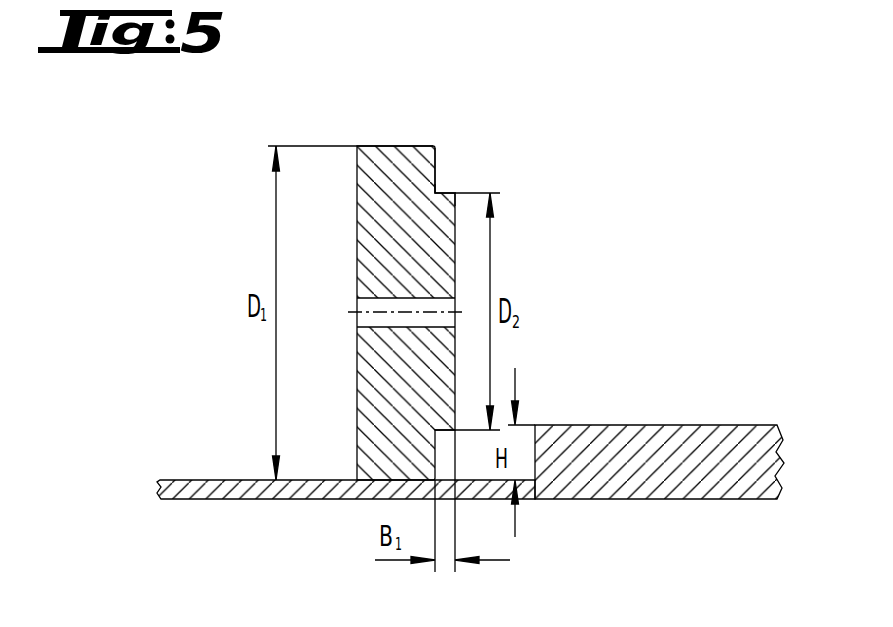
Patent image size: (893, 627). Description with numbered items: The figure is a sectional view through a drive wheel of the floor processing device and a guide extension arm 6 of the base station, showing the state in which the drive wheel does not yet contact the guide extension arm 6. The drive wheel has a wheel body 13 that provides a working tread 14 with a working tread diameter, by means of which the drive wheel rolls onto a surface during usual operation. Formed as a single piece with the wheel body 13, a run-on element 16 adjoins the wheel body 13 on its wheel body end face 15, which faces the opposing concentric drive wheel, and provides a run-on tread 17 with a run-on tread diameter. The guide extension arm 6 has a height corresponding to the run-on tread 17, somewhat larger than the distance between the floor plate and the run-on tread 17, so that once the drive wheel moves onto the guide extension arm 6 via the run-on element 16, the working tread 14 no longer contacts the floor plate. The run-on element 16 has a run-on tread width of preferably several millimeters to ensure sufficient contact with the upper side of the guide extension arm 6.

The guide extension arm 6 is at (663, 465).
The wheel body 13 is at (372, 207).
The working tread 14 is at (387, 146).
The wheel body end face 15 is at (437, 160).
The run-on element 16 is at (448, 205).
The run-on tread 17 is at (438, 193).